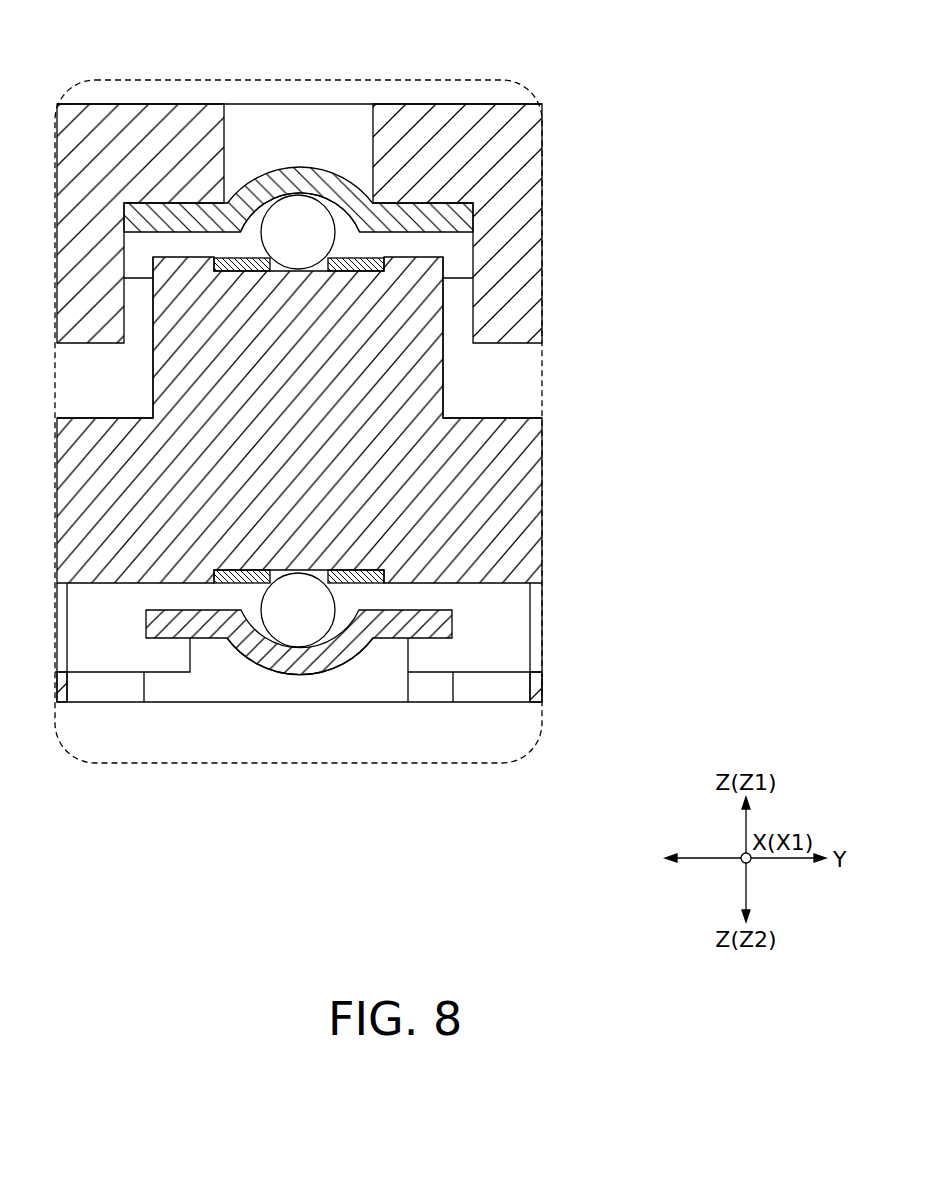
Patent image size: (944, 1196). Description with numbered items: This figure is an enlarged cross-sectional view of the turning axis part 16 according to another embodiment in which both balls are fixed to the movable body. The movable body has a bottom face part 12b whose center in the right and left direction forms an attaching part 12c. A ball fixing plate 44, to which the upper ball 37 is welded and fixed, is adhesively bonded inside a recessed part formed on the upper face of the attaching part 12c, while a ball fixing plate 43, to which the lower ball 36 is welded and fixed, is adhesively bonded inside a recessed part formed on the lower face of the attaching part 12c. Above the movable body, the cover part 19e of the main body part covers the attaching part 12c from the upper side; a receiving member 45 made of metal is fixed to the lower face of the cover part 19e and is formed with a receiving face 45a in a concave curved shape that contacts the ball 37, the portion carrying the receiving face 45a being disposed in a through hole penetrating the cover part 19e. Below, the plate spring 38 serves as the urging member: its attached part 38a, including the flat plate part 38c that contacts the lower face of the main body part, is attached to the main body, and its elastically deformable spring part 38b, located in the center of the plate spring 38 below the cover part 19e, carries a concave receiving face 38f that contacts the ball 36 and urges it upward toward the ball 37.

The cover part 19e is at (160, 103).
The bottom face part 12b is at (108, 418).
The attaching part 12c is at (445, 391).
The turning axis part 16 is at (313, 743).
The receiving member 45 is at (265, 171).
The receiving face 45a is at (299, 197).
The ball 37 is at (298, 270).
The ball fixing plate 44 is at (232, 273).
The ball fixing plate 43 is at (242, 570).
The ball 36 is at (308, 573).
The spring part 38b is at (378, 642).
The receiving face 38f is at (303, 648).
The plate spring 38 is at (103, 703).
The attached part 38a is at (468, 703).
The flat plate part 38c is at (515, 748).